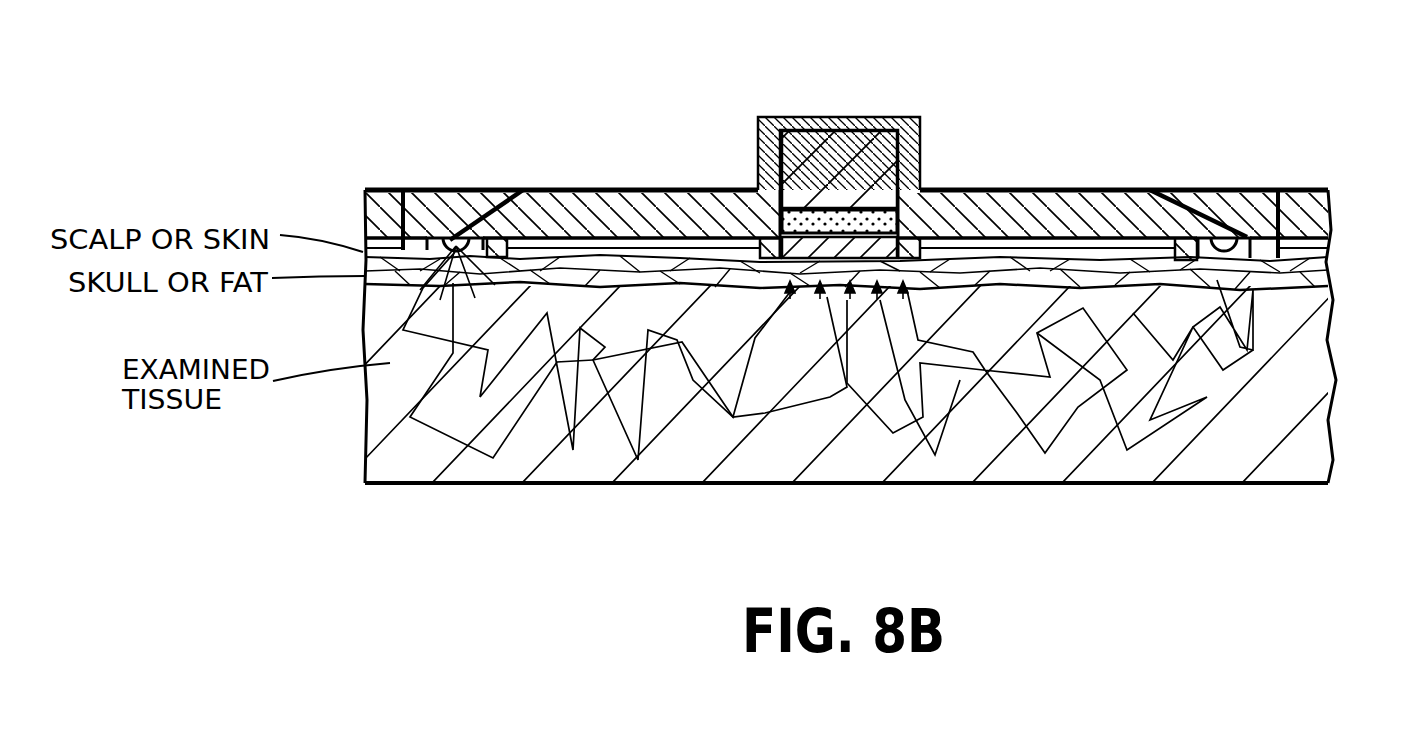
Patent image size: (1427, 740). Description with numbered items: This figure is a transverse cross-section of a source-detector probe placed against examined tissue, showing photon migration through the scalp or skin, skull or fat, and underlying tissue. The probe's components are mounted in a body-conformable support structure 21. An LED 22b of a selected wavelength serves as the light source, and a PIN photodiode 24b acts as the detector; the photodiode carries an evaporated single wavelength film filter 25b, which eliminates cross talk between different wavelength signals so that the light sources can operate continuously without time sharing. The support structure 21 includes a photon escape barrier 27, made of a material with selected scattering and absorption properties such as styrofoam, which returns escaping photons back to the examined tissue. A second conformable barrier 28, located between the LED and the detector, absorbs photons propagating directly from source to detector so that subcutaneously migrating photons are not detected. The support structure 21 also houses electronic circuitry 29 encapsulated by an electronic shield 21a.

The body-conformable support structure 21 is at (594, 188).
The electronic shield 21a is at (783, 124).
The LED 22b is at (452, 238).
The PIN photodiode 24b is at (862, 250).
The single wavelength film filter 25b is at (888, 230).
The photon escape barrier 27 is at (721, 234).
The second conformable barrier 28 is at (458, 243).
The electronic circuitry 29 is at (852, 150).